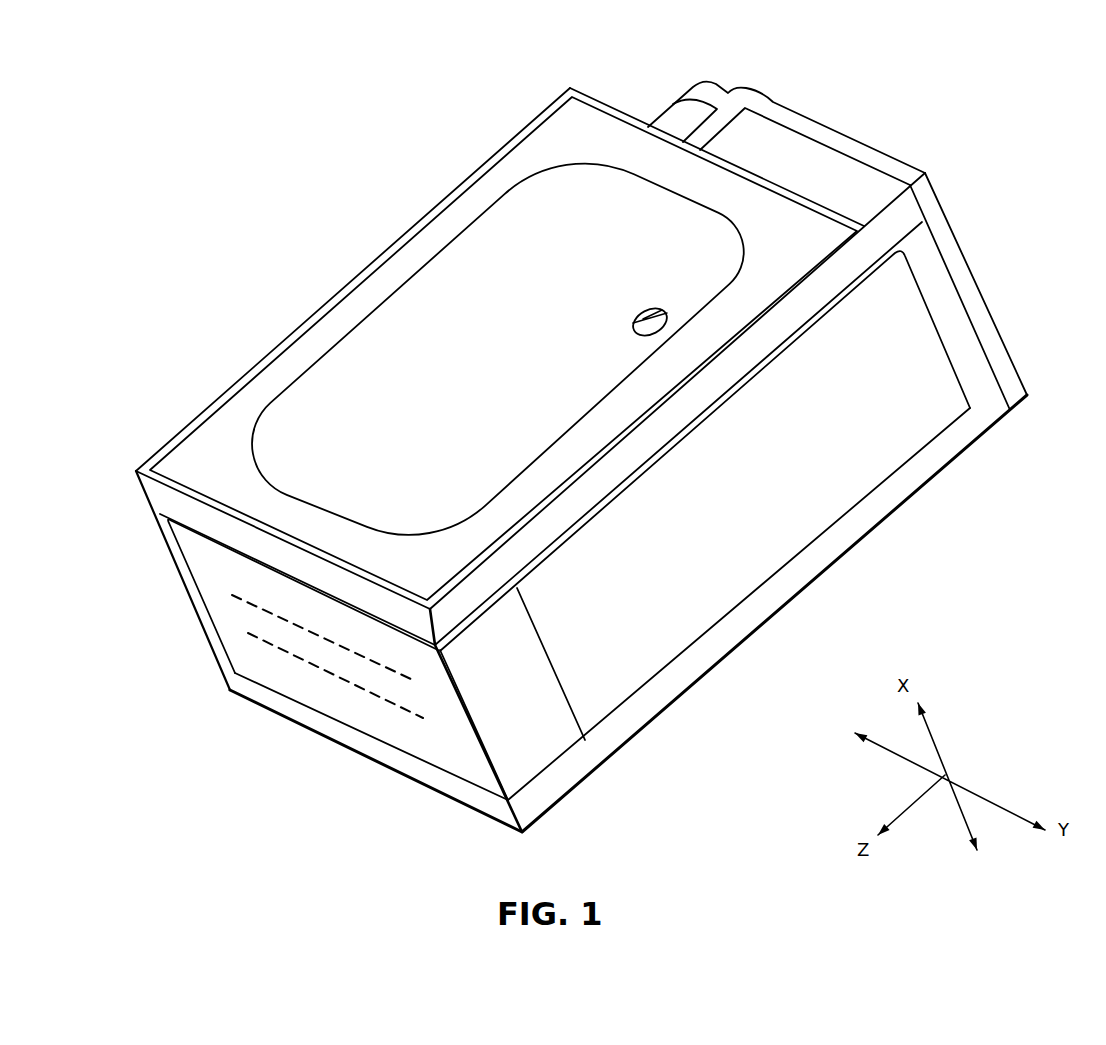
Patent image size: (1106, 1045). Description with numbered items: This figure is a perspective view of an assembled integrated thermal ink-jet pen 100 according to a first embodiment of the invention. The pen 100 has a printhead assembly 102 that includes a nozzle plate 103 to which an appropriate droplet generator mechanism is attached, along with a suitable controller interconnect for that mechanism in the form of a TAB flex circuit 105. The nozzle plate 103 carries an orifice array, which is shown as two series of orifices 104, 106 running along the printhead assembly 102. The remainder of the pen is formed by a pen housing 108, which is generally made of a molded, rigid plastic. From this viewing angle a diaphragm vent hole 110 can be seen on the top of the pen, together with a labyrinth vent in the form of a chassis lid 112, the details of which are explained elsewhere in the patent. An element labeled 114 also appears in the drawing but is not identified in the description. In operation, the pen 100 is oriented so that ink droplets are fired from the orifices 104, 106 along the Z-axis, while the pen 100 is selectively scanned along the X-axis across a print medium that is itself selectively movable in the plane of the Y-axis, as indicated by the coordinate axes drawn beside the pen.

The pen 100 is at (350, 153).
The printhead assembly 102 is at (447, 740).
The nozzle plate 103 is at (377, 718).
The orifices 104 is at (253, 602).
The TAB flex circuit 105 is at (640, 658).
The orifices 106 is at (280, 650).
The pen housing 108 is at (605, 742).
The diaphragm vent hole 110 is at (640, 317).
The chassis lid 112 is at (378, 343).
The hinge tab 114 is at (783, 163).